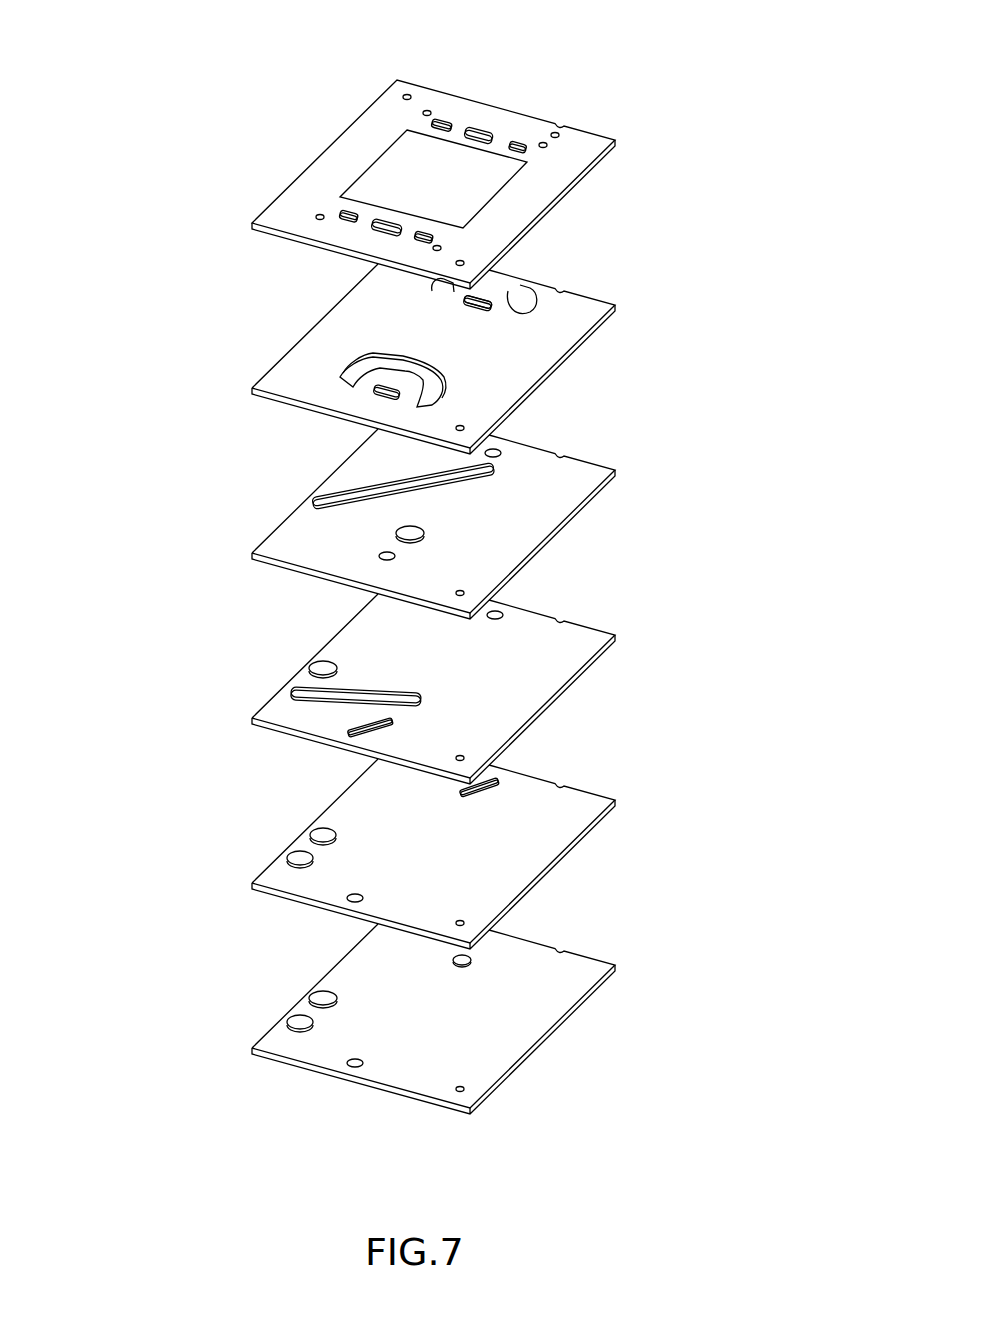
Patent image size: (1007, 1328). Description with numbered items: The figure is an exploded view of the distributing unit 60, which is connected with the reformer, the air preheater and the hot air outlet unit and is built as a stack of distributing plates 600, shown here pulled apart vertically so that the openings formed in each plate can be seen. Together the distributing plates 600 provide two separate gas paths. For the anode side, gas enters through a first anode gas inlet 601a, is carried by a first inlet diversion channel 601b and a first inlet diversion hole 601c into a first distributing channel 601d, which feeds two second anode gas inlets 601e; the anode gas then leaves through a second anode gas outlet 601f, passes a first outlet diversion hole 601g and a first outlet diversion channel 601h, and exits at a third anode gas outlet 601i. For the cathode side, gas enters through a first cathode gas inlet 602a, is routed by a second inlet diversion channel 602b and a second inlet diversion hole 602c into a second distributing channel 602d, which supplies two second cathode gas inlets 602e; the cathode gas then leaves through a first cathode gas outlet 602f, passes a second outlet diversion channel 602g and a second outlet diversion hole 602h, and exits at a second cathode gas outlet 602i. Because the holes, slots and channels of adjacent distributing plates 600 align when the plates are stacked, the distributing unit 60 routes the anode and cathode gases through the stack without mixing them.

The distributing unit 60 is at (226, 137).
The distributing plates 600 is at (577, 147).
The first anode gas inlet 601a is at (464, 958).
The first inlet diversion channel 601b is at (497, 781).
The first inlet diversion hole 601c is at (494, 454).
The first distributing channel 601d is at (487, 298).
The second anode gas inlets 601e is at (442, 121).
The second anode gas outlet 601f is at (380, 229).
The first outlet diversion hole 601g is at (386, 557).
The first outlet diversion channel 601h is at (350, 731).
The third anode gas outlet 601i is at (354, 899).
The first cathode gas inlet 602a is at (298, 858).
The second inlet diversion channel 602b is at (292, 692).
The second inlet diversion hole 602c is at (405, 534).
The second distributing channel 602d is at (345, 377).
The second cathode gas inlets 602e is at (343, 216).
The first cathode gas outlet 602f is at (482, 130).
The second outlet diversion channel 602g is at (495, 467).
The second outlet diversion hole 602h is at (322, 669).
The second cathode gas outlet 602i is at (322, 998).